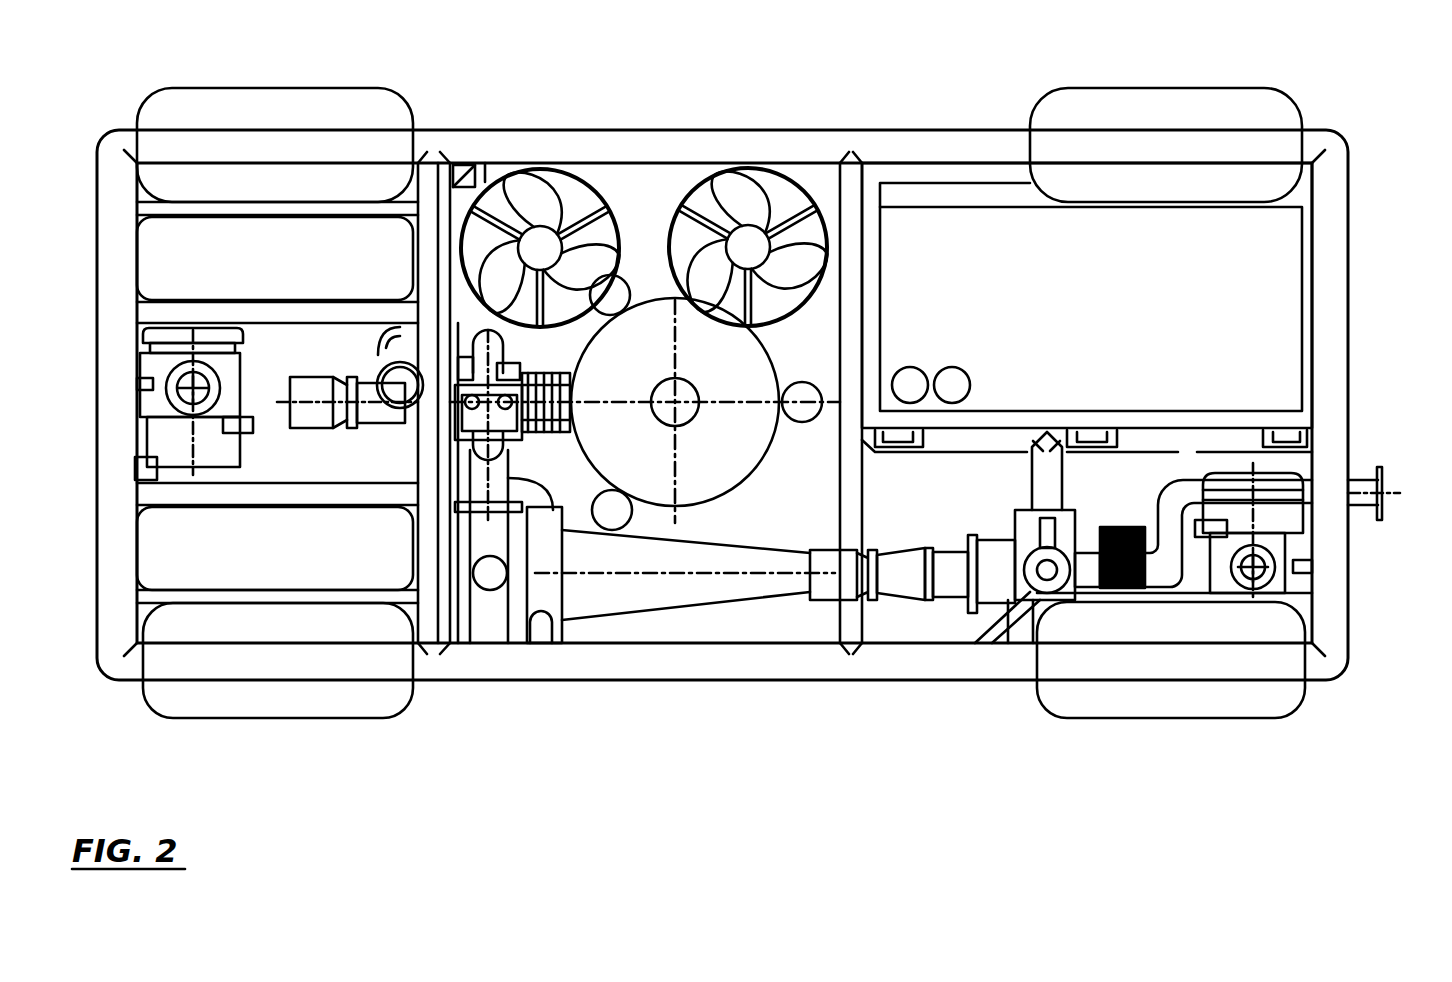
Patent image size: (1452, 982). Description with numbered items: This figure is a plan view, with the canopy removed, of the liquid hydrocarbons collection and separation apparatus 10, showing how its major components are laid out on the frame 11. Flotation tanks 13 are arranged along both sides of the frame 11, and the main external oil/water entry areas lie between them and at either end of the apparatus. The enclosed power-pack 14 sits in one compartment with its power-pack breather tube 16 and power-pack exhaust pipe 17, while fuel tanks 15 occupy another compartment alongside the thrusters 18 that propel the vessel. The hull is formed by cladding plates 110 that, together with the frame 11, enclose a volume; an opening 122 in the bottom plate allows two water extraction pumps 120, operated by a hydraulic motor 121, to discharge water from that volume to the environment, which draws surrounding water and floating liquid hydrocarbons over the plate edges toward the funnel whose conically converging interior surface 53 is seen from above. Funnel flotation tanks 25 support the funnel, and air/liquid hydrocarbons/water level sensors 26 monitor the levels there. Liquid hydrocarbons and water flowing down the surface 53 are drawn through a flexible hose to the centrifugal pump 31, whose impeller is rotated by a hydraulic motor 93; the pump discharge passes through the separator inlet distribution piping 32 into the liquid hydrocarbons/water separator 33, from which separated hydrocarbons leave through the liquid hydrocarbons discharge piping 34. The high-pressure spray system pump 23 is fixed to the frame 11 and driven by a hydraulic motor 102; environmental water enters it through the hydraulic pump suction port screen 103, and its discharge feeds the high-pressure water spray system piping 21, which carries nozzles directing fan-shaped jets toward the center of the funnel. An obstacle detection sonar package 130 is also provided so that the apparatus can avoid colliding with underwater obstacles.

The liquid hydrocarbons collection and separation apparatus 10 is at (935, 712).
The frame 11 is at (282, 125).
The flotation tanks 13 is at (336, 87).
The enclosed power-pack 14 is at (1180, 270).
The fuel tanks 15 is at (232, 256).
The power-pack breather tube 16 is at (910, 367).
The power-pack exhaust pipe 17 is at (952, 367).
The thrusters 18 is at (245, 450).
The high-pressure water spray system piping 21 is at (280, 218).
The high-pressure spray system pump 23 is at (1012, 513).
The funnel flotation tanks 25 is at (800, 422).
The air/liquid hydrocarbons/water level sensors 26 is at (675, 508).
The centrifugal pump 31 is at (522, 446).
The separator inlet distribution piping 32 is at (497, 643).
The liquid hydrocarbons/water separator 33 is at (692, 612).
The liquid hydrocarbons discharge piping 34 is at (1183, 482).
The conically converging interior surface 53 is at (752, 380).
The hydraulic motor 93 is at (318, 430).
The hydraulic motor 102 is at (822, 604).
The hydraulic pump suction port screen 103 is at (1122, 527).
The hull cladding plates 110 is at (877, 127).
The water extraction pumps 120 is at (646, 196).
The hydraulic motor 121 is at (728, 200).
The opening 122 is at (803, 183).
The obstacle detection sonar package 130 is at (492, 163).